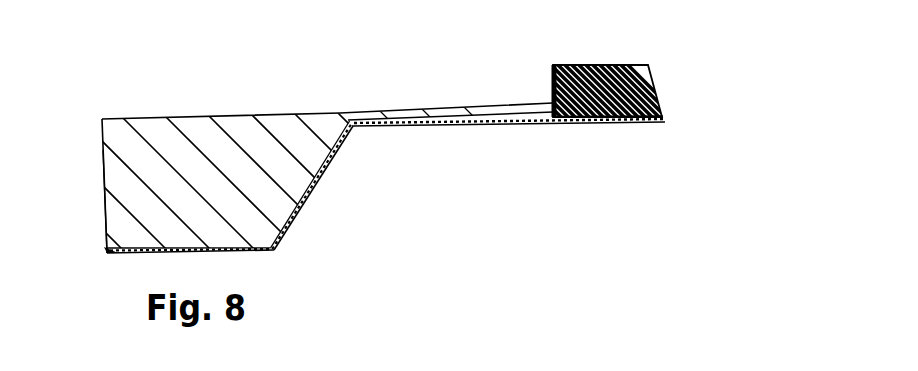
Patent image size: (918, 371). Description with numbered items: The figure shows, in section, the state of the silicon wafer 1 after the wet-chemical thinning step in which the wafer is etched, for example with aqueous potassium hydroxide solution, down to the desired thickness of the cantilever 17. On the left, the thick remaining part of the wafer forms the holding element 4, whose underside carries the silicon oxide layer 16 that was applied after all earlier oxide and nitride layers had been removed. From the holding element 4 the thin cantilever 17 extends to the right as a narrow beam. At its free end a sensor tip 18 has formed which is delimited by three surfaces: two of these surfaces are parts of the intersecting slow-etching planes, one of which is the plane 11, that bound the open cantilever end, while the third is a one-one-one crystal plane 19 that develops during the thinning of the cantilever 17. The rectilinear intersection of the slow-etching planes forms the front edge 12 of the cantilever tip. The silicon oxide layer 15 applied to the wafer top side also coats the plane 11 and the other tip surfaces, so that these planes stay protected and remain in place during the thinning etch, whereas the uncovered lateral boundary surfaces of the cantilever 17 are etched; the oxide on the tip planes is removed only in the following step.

The silicon wafer 1 is at (118, 172).
The holding element 4 is at (105, 217).
The silicon oxide layer 16 is at (108, 252).
The cantilever 17 is at (427, 112).
The slow-etching plane 11 is at (598, 128).
The front edge 12 is at (652, 79).
The silicon oxide layer 15 is at (590, 63).
The (111)-crystal plane 19 is at (622, 63).
The sensor tip 18 is at (645, 61).